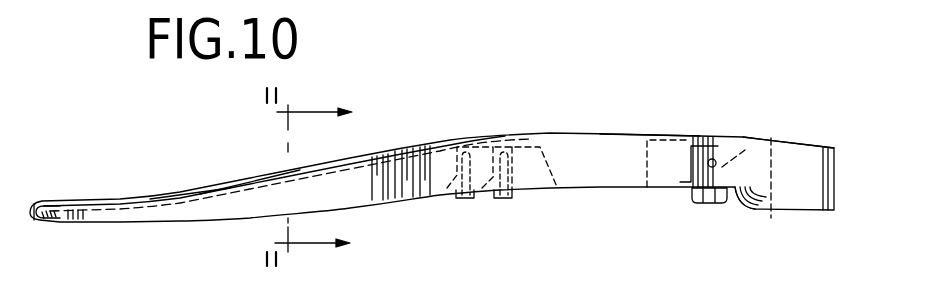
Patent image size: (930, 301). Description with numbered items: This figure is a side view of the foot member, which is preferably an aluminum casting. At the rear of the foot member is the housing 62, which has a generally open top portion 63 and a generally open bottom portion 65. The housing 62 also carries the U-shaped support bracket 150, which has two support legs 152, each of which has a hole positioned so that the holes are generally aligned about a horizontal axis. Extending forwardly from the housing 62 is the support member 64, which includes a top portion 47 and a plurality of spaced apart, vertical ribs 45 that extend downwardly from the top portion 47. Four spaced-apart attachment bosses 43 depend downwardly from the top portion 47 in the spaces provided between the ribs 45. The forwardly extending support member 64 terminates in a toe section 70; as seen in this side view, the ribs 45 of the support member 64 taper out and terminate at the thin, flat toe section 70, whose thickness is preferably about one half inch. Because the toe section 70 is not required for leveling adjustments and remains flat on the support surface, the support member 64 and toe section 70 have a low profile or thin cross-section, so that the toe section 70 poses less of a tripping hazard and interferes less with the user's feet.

The attachment bosses 43 is at (488, 200).
The vertical ribs 45 is at (353, 187).
The top portion 47 is at (190, 193).
The housing 62 is at (711, 146).
The open top portion 63 is at (637, 137).
The support member 64 is at (248, 176).
The open bottom portion 65 is at (630, 188).
The toe section 70 is at (60, 223).
The U-shaped support bracket 150 is at (768, 139).
The support legs 152 is at (764, 212).